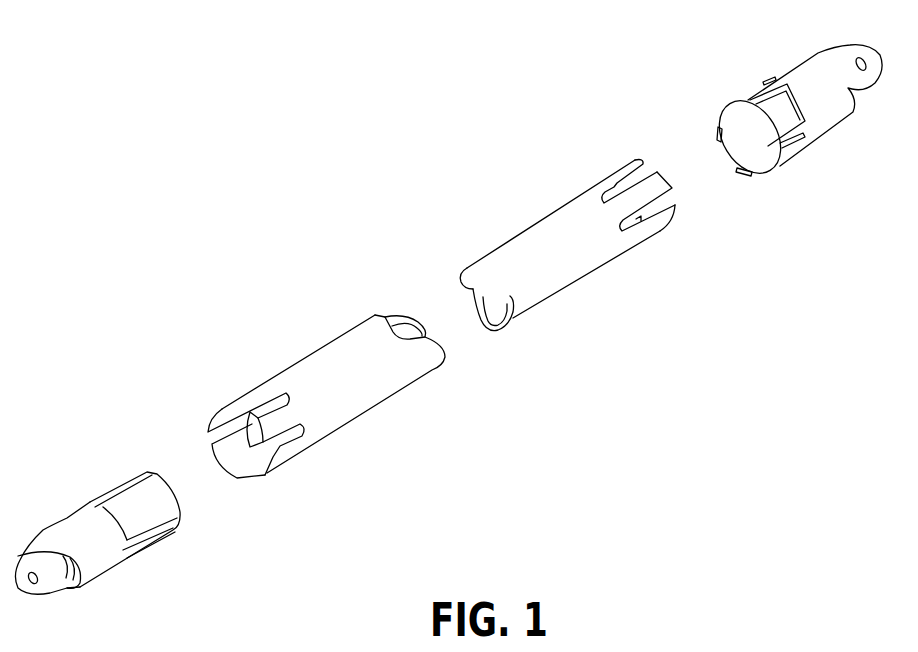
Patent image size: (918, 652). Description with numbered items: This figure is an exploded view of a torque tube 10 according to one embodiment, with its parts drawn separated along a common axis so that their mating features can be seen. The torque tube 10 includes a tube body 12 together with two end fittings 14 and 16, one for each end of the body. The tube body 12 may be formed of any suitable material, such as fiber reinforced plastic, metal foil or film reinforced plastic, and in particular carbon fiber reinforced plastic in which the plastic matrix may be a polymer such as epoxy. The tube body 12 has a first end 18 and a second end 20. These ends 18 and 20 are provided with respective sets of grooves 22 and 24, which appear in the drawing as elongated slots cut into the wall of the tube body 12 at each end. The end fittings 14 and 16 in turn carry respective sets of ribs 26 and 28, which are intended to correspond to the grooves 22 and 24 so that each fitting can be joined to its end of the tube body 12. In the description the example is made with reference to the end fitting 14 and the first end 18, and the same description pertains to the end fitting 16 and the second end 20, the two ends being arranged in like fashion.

The torque tube 10 is at (310, 128).
The tube body 12 is at (505, 219).
The end fitting 14 is at (102, 466).
The end fitting 16 is at (766, 62).
The first end 18 is at (236, 381).
The second end 20 is at (653, 134).
The grooves 22 is at (283, 480).
The grooves 24 is at (700, 208).
The ribs 26 is at (167, 540).
The ribs 28 is at (791, 163).